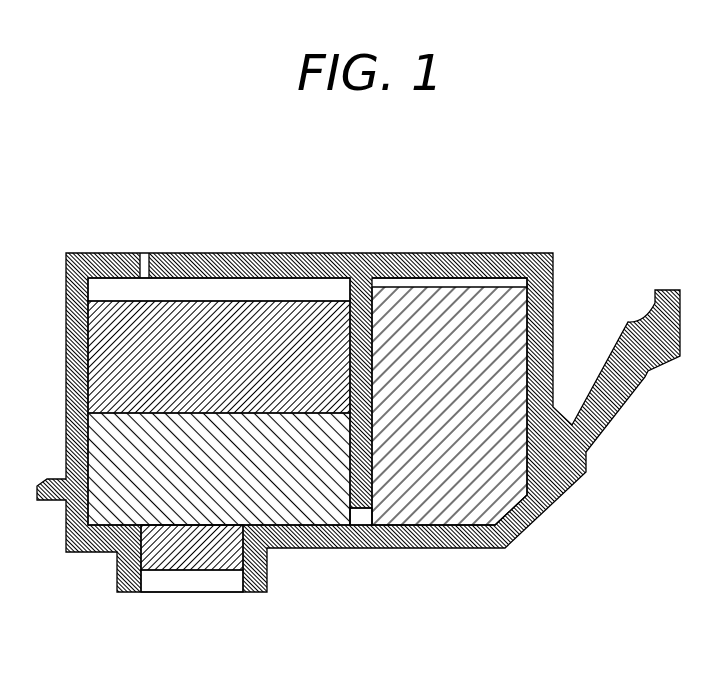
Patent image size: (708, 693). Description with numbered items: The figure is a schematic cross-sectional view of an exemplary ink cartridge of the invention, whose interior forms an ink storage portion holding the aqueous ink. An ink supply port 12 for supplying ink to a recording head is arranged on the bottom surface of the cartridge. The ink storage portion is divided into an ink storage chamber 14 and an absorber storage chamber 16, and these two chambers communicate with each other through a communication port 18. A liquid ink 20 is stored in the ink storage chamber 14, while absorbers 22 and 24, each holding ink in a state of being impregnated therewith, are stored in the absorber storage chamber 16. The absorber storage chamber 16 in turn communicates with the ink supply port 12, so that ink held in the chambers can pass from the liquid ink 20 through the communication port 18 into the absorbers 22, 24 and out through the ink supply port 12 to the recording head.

The ink supply port 12 is at (196, 583).
The ink storage chamber 14 is at (492, 283).
The absorber storage chamber 16 is at (203, 290).
The communication port 18 is at (365, 515).
The liquid ink 20 is at (475, 495).
The absorber 22 is at (108, 447).
The absorber 24 is at (137, 356).